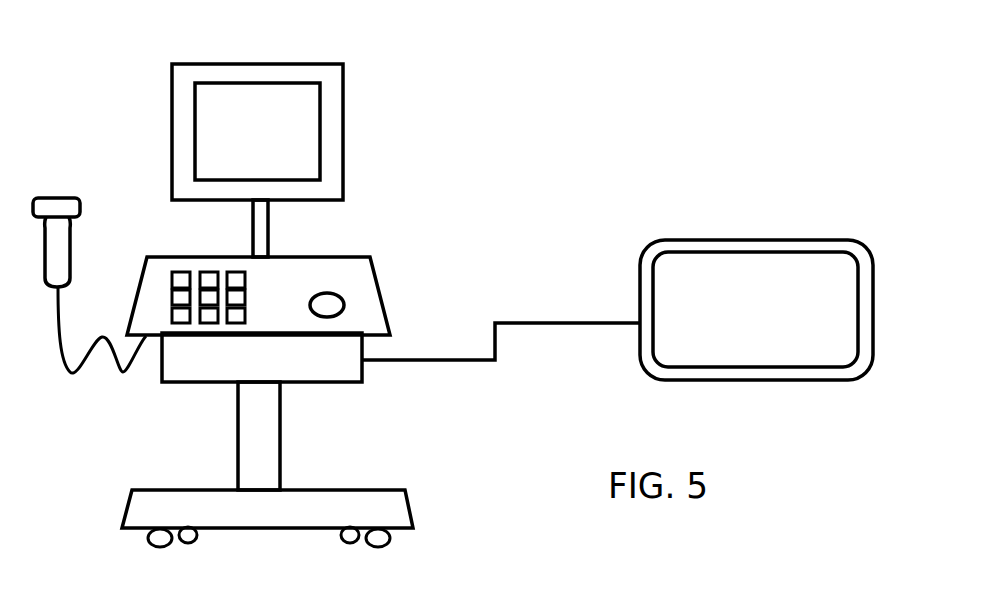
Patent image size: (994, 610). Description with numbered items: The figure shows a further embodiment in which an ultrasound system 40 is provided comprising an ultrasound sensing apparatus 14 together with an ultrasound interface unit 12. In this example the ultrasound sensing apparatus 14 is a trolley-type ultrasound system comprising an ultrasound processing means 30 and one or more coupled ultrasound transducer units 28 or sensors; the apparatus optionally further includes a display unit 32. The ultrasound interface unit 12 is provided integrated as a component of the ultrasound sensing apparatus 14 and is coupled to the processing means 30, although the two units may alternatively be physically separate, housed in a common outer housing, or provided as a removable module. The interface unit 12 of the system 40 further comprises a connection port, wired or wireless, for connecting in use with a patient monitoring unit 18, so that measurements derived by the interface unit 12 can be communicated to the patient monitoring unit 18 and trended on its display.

The ultrasound sensing apparatus 14 is at (124, 63).
The display unit 32 is at (345, 90).
The ultrasound processing means 30 is at (381, 291).
The ultrasound interface unit 12 is at (363, 373).
The ultrasound transducer unit 28 is at (70, 223).
The patient monitoring unit 18 is at (630, 238).
The ultrasound system 40 is at (488, 96).